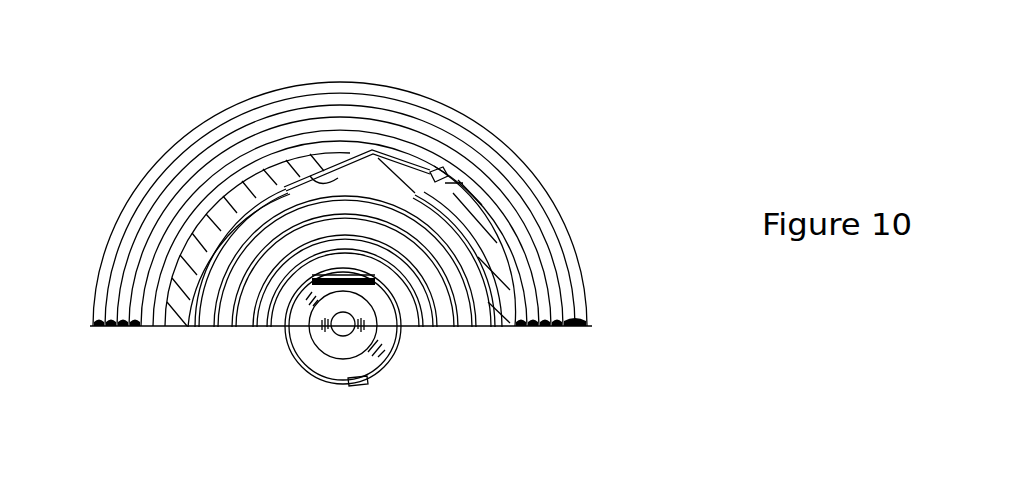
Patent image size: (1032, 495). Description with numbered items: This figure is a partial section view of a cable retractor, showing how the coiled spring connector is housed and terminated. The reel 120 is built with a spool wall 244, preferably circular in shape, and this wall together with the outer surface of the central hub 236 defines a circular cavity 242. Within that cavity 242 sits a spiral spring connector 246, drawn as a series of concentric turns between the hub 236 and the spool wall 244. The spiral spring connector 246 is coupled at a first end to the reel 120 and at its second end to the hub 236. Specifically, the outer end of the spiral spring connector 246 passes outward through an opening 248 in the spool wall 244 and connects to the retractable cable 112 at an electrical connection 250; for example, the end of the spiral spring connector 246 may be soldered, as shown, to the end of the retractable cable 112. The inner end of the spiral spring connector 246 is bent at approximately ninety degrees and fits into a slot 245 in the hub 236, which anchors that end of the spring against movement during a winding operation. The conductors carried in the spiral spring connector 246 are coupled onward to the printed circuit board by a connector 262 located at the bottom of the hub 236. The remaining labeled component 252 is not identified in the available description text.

The retractable cable 112 is at (123, 224).
The reel 120 is at (443, 218).
The hub 236 is at (348, 367).
The circular cavity 242 is at (487, 250).
The spool wall 244 is at (470, 202).
The slot 245 is at (373, 290).
The spiral spring connector 246 is at (453, 304).
The opening 248 is at (342, 170).
The electrical connection 250 is at (438, 165).
The liner 252 is at (323, 262).
The connector 262 is at (362, 392).